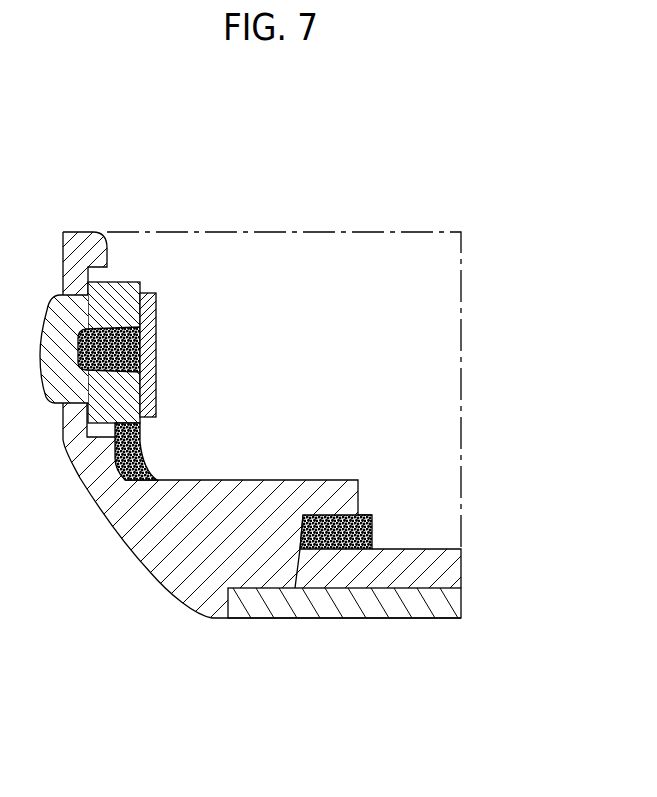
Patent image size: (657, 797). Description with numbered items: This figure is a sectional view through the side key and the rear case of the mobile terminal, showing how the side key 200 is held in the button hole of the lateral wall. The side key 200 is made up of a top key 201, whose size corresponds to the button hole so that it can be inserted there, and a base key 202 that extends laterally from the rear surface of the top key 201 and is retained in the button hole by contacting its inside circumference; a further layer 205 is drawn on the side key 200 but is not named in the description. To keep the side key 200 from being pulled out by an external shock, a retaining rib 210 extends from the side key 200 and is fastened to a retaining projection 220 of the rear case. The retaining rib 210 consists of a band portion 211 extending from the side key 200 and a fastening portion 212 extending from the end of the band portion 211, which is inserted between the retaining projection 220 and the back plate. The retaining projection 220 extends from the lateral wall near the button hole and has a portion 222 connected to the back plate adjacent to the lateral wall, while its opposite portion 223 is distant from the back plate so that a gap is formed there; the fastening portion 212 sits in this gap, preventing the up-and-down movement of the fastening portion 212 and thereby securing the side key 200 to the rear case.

The side key 200 is at (193, 123).
The top key 201 is at (60, 332).
The base key 202 is at (120, 282).
The print layer 205 is at (148, 303).
The retaining rib 210 is at (553, 428).
The band portion 211 is at (137, 452).
The fastening portion 212 is at (372, 530).
The retaining projection 220 is at (343, 713).
The portion connected to the back plate 222 is at (262, 540).
The portion forming the gap 223 is at (335, 498).